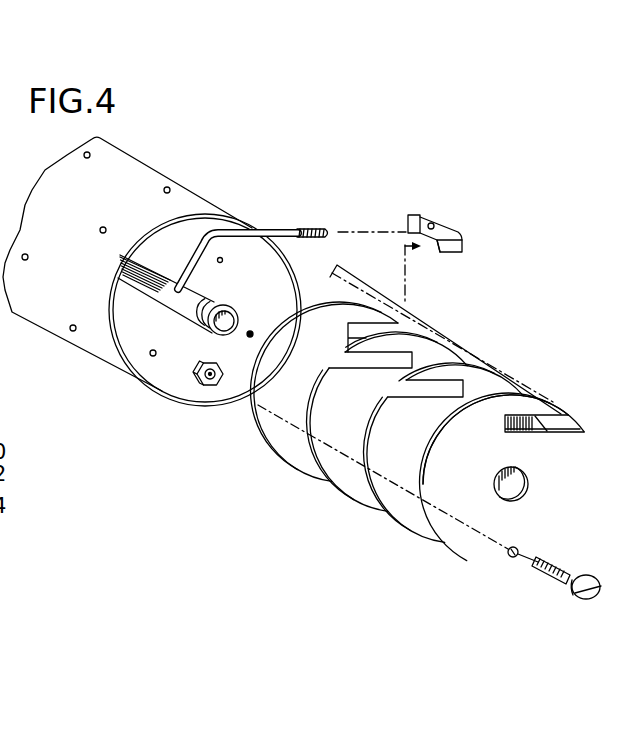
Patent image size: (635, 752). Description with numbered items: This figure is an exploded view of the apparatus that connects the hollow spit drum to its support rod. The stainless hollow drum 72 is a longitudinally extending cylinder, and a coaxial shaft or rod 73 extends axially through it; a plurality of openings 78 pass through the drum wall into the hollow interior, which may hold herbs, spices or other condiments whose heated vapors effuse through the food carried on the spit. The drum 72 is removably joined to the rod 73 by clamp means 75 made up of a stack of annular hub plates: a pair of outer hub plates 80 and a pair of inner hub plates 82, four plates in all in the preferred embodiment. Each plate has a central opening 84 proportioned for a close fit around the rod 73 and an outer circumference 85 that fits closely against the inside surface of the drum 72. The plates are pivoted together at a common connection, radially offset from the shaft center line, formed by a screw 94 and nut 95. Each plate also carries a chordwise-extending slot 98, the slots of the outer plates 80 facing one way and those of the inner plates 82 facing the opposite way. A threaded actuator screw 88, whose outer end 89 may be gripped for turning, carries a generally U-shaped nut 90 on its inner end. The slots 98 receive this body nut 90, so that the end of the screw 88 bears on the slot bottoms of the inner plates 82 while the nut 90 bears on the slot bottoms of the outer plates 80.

The hollow drum 72 is at (152, 284).
The shaft or rod 73 is at (203, 294).
The clamp means 75 is at (430, 449).
The openings 78 is at (172, 188).
The outer hub plates 80 is at (303, 447).
The inner hub plates 82 is at (412, 520).
The central opening 84 is at (518, 487).
The outer circumference 85 is at (515, 464).
The threaded actuator screw 88 is at (244, 240).
The outer end 89 is at (181, 281).
The U-shaped nut 90 is at (458, 245).
The screw 94 is at (578, 598).
The nut 95 is at (208, 390).
The chordwise-extending slots 98 is at (574, 400).